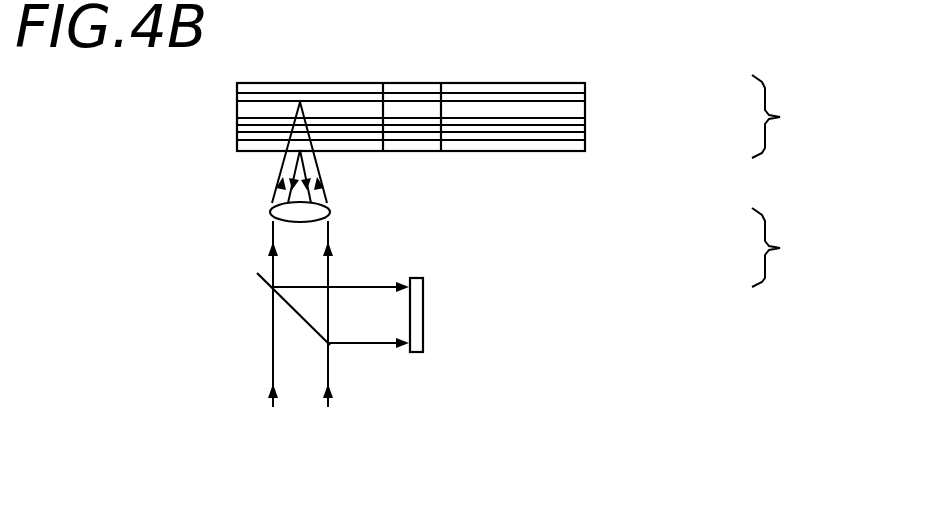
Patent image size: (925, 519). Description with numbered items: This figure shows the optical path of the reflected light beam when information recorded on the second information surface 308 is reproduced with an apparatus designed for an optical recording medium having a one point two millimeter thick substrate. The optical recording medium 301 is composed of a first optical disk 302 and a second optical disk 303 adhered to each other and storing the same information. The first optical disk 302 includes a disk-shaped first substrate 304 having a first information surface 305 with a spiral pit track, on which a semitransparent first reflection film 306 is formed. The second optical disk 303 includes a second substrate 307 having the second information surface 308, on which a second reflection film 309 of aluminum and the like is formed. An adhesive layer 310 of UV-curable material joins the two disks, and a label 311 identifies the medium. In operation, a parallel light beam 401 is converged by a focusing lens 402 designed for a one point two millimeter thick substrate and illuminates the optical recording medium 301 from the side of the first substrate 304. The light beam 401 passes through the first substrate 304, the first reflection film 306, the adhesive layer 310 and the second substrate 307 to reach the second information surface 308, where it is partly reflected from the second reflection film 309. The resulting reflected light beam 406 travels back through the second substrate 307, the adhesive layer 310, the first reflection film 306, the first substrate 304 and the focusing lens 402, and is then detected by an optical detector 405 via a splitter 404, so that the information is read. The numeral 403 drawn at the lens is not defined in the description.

The optical recording medium 301 is at (598, 37).
The first optical disk 302 is at (804, 247).
The second optical disk 303 is at (804, 116).
The first substrate 304 is at (585, 147).
The first information surface 305 is at (516, 132).
The first reflection film 306 is at (585, 136).
The second substrate 307 is at (585, 110).
The second information surface 308 is at (368, 95).
The second reflection film 309 is at (585, 93).
The adhesive layer 310 is at (585, 122).
The label 311 is at (585, 86).
The parallel light beam 401 is at (297, 397).
The focusing lens 402 is at (330, 210).
The converging light beam 403 is at (275, 203).
The splitter 404 is at (328, 343).
The optical detector 405 is at (423, 313).
The reflected light beam 406 is at (326, 188).